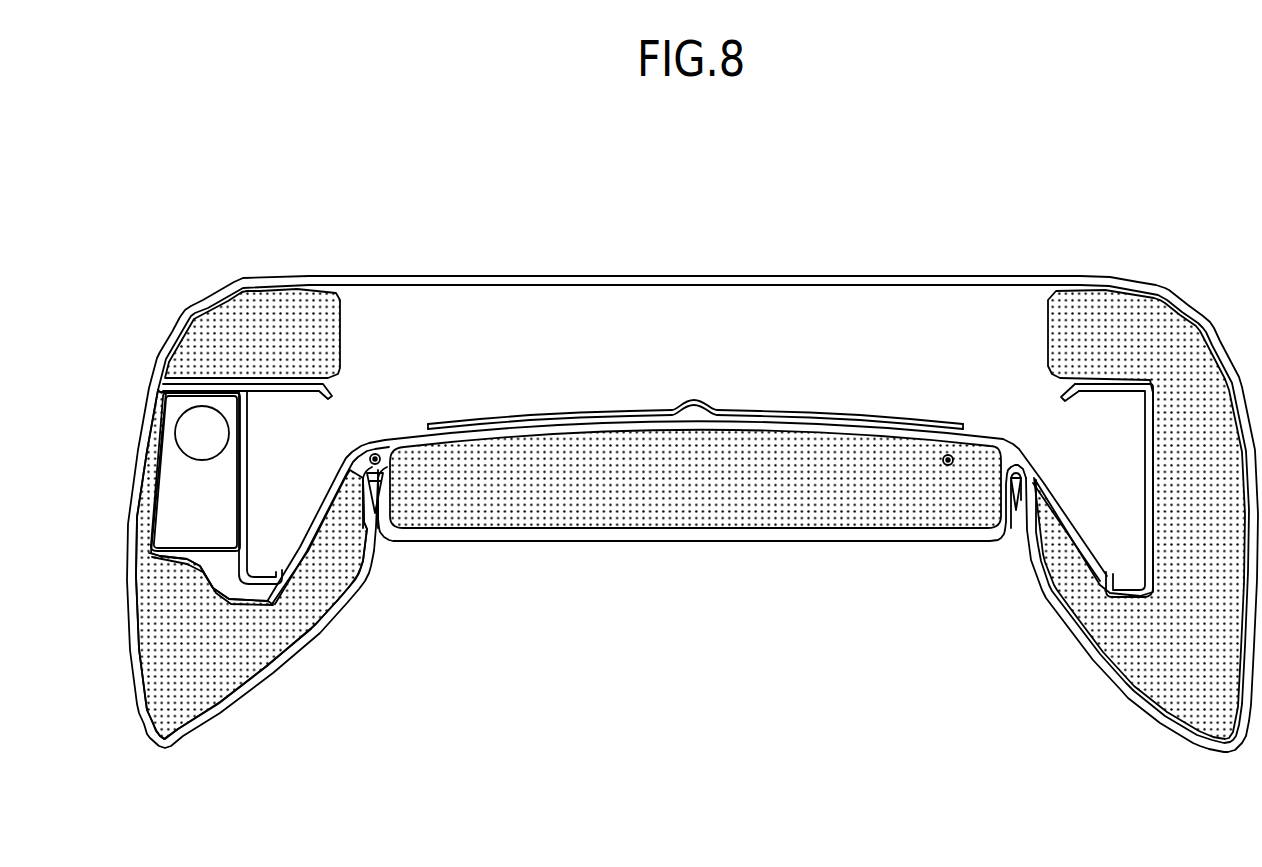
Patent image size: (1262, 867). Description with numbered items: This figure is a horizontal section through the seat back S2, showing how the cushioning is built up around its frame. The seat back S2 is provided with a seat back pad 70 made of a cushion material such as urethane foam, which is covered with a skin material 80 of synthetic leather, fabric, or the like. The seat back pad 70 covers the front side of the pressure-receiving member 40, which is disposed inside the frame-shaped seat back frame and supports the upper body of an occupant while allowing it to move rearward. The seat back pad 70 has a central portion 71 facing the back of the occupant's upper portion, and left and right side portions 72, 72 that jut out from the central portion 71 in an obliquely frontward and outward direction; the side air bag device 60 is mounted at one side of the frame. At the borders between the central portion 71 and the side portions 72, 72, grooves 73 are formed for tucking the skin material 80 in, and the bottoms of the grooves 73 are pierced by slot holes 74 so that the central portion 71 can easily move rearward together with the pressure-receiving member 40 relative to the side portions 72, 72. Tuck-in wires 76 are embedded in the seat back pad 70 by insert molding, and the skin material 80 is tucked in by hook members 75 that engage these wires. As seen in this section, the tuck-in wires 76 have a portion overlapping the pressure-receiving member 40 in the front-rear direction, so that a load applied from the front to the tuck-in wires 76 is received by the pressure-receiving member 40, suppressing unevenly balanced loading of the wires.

The seat back S2 is at (891, 251).
The pressure-receiving member 40 is at (795, 402).
The side air bag device 60 is at (149, 443).
The seat back pad 70 is at (742, 548).
The central portion 71 is at (837, 507).
The side portion 72 is at (258, 658).
The groove 73 is at (360, 478).
The slot hole 74 is at (1011, 456).
The hook member 75 is at (392, 455).
The tuck-in wire 76 is at (375, 453).
The skin material 80 is at (623, 541).